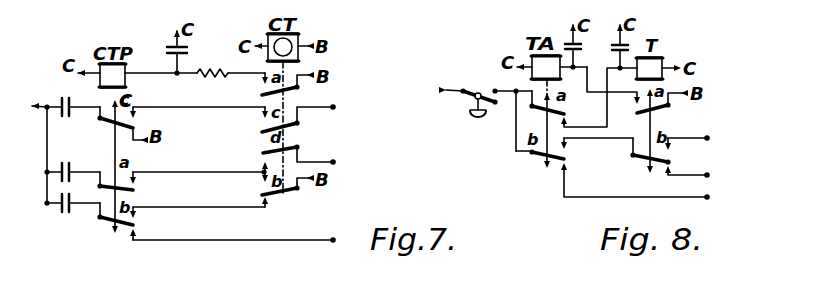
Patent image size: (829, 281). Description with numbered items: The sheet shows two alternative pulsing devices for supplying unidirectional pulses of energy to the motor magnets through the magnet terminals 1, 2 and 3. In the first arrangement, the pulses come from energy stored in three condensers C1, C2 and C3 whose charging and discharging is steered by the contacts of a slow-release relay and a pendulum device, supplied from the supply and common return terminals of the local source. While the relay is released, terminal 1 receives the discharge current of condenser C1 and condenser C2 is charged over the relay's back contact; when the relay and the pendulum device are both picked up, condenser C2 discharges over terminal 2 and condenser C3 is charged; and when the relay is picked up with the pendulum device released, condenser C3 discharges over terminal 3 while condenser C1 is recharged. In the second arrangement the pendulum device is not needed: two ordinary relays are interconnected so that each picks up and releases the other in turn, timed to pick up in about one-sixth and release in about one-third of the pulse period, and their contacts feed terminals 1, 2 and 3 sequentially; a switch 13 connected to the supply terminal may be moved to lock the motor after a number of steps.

In FIG. 8, the circuit controller 13 is at (478, 93).
In FIG. 7, the magnet terminal 1 is at (241, 240).
In FIG. 8, the magnet terminal 1 is at (646, 188).
In FIG. 7, the magnet terminal 2 is at (323, 111).
In FIG. 8, the magnet terminal 2 is at (697, 138).
In FIG. 7, the magnet terminal 3 is at (323, 160).
In FIG. 8, the magnet terminal 3 is at (697, 167).
In FIG. 7, the condenser C1 is at (74, 196).
In FIG. 7, the condenser C2 is at (56, 102).
In FIG. 7, the condenser C3 is at (74, 164).